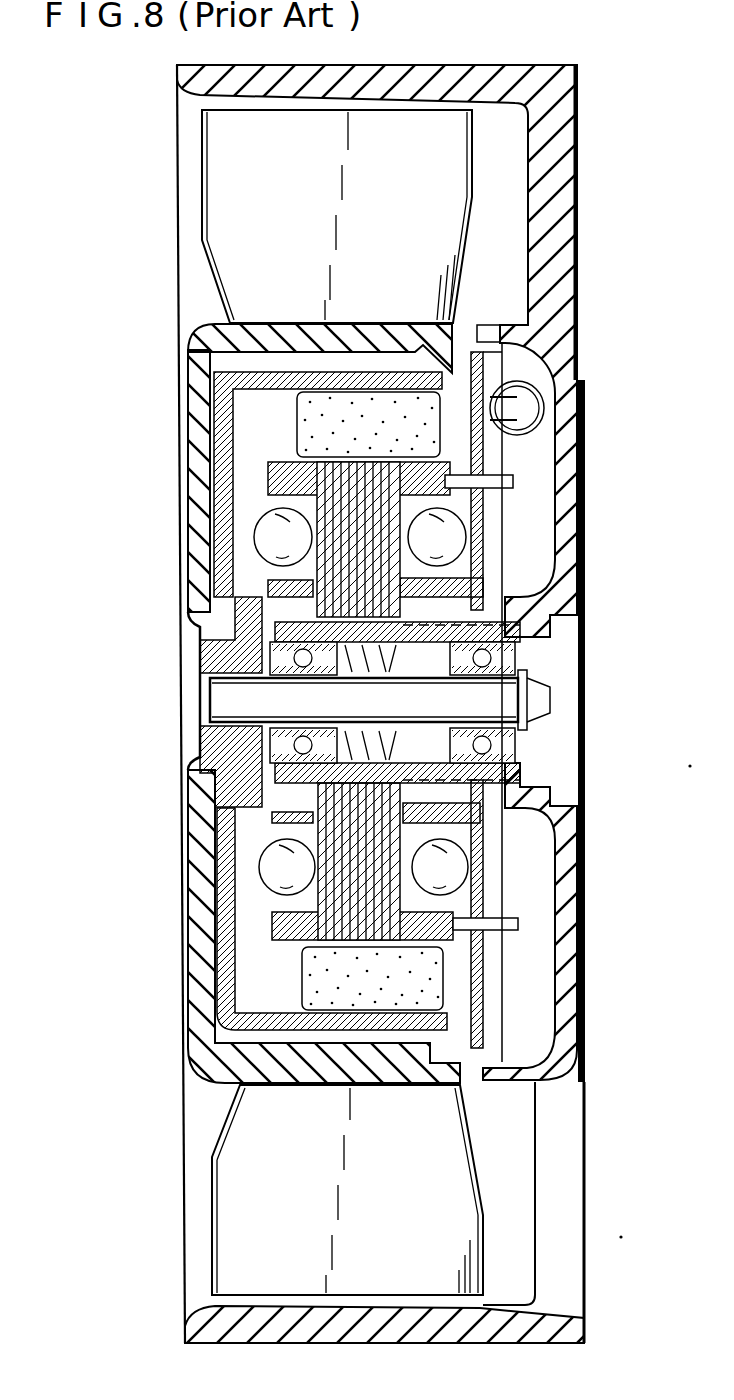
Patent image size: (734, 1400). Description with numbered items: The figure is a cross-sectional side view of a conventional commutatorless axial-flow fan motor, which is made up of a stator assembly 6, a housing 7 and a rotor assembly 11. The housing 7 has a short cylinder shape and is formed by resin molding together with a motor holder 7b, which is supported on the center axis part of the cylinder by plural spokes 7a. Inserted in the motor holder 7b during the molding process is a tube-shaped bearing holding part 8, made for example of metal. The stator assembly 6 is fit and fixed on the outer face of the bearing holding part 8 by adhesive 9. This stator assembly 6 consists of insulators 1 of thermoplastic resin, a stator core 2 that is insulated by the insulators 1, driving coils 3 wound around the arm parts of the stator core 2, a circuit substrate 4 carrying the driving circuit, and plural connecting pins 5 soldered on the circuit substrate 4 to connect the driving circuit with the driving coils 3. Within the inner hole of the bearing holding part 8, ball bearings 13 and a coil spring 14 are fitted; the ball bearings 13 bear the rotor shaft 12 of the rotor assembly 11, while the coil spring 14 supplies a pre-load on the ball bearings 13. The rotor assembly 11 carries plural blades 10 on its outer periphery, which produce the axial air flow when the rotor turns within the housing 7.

The insulators 1 is at (485, 892).
The stator core 2 is at (297, 937).
The driving coils 3 is at (463, 542).
The circuit substrate 4 is at (485, 1028).
The connecting pins 5 is at (513, 482).
The stator assembly 6 is at (255, 848).
The housing 7 is at (470, 66).
The spokes 7a is at (565, 243).
The motor holder 7b is at (568, 818).
The bearing holding part 8 is at (518, 778).
The adhesive 9 is at (300, 795).
The blades 10 is at (215, 1176).
The rotor assembly 11 is at (182, 400).
The rotor shaft 12 is at (218, 697).
The ball bearings 13 is at (295, 657).
The coil spring 14 is at (263, 653).